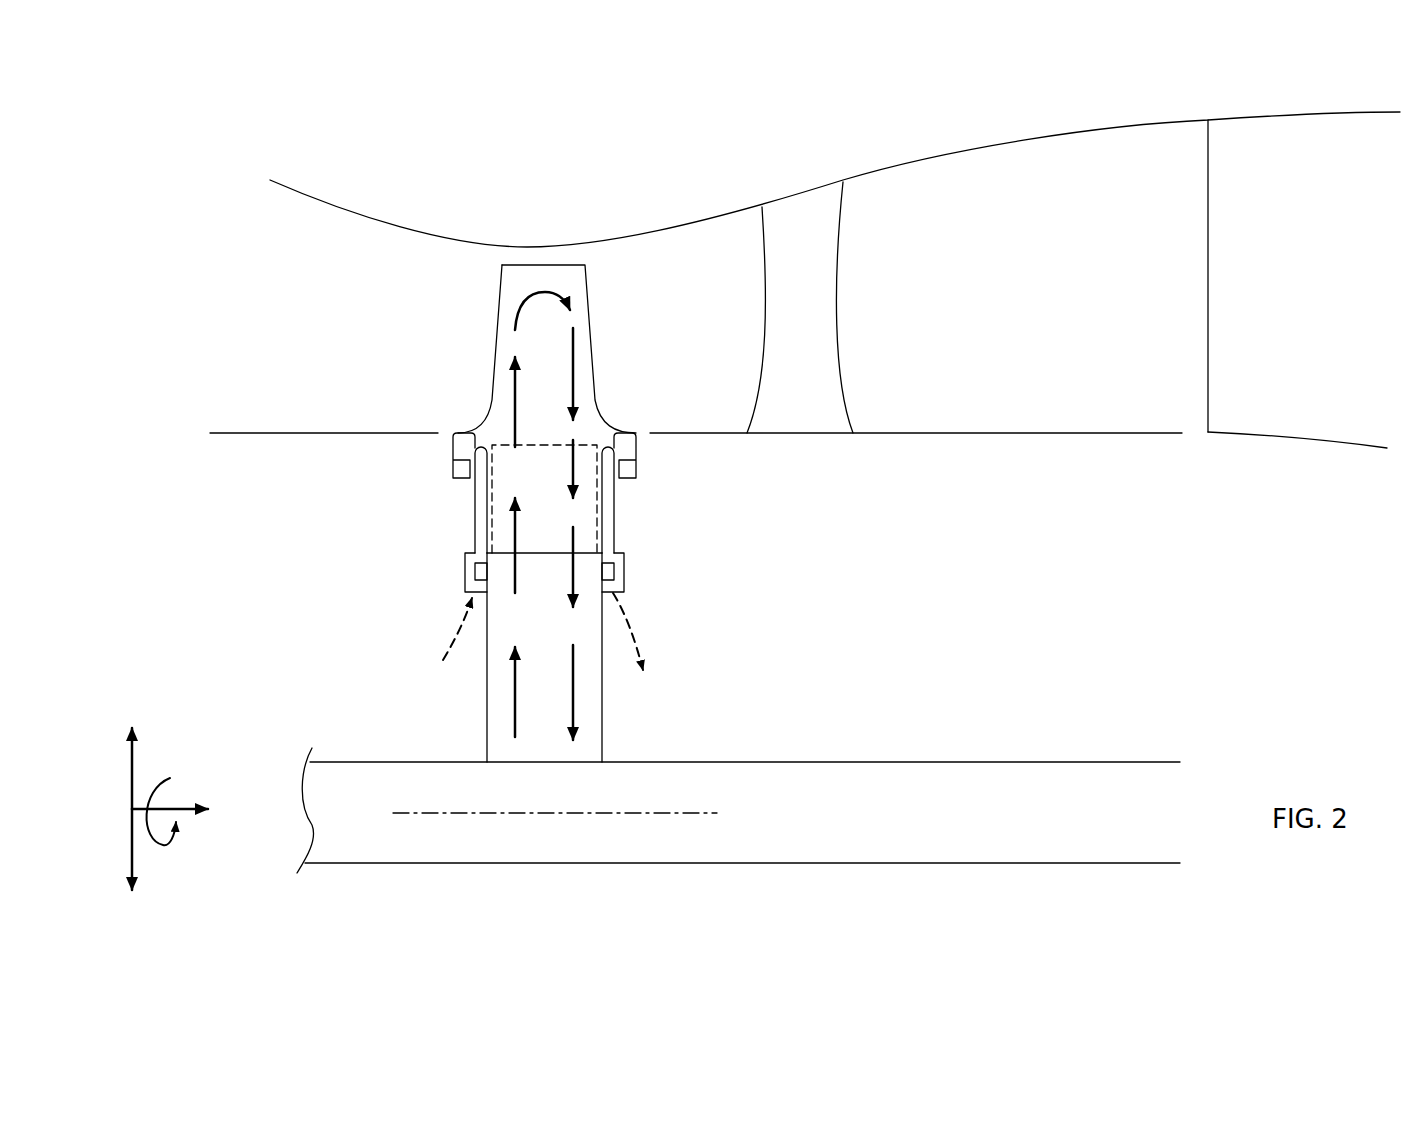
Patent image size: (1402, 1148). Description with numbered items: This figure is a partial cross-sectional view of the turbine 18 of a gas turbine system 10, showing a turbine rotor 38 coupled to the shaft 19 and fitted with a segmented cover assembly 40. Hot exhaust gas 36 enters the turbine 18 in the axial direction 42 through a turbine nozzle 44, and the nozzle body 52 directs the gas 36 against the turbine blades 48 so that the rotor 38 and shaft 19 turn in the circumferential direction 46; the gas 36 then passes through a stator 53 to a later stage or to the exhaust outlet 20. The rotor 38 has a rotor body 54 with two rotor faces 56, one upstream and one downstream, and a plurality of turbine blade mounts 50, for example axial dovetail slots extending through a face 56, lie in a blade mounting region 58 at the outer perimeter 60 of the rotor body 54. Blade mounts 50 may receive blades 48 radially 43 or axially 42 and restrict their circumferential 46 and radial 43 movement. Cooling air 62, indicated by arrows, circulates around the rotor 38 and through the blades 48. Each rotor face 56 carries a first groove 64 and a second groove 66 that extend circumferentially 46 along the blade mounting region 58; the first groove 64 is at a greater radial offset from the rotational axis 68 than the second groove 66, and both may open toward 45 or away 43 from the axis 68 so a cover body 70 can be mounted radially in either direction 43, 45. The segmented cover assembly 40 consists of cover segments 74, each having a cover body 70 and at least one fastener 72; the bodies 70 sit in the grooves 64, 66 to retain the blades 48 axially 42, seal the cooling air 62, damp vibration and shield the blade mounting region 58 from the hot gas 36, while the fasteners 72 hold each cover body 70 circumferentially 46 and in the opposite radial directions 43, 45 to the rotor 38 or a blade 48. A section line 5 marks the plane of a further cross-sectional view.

The section line 5 is at (353, 687).
The turbine section 10 is at (745, 168).
The turbine 18 is at (575, 215).
The shaft 19 is at (740, 864).
The exhaust outlet 20 is at (1342, 294).
The hot exhaust gas 36 is at (410, 326).
The turbine rotor 38 is at (495, 640).
The segmented cover assembly 40 is at (574, 493).
The axial direction 42 is at (172, 808).
The first radial direction 43 is at (130, 775).
The turbine nozzle 44 is at (465, 292).
The second radial direction 45 is at (130, 855).
The circumferential direction 46 is at (163, 845).
The turbine blade 48 is at (575, 340).
The turbine blade mount 50 is at (545, 553).
The nozzle body 52 is at (405, 228).
The stator 53 is at (818, 324).
The rotor body 54 is at (560, 751).
The rotor face 56 is at (487, 670).
The blade mounting region 58 is at (560, 448).
The outer perimeter 60 is at (460, 430).
The cooling air 62 is at (547, 293).
The first groove 64 is at (473, 427).
The second groove 66 is at (475, 575).
The rotational axis 68 is at (557, 815).
The cover body 70 is at (477, 507).
The fastener 72 is at (453, 463).
The cover segment 74 is at (574, 493).